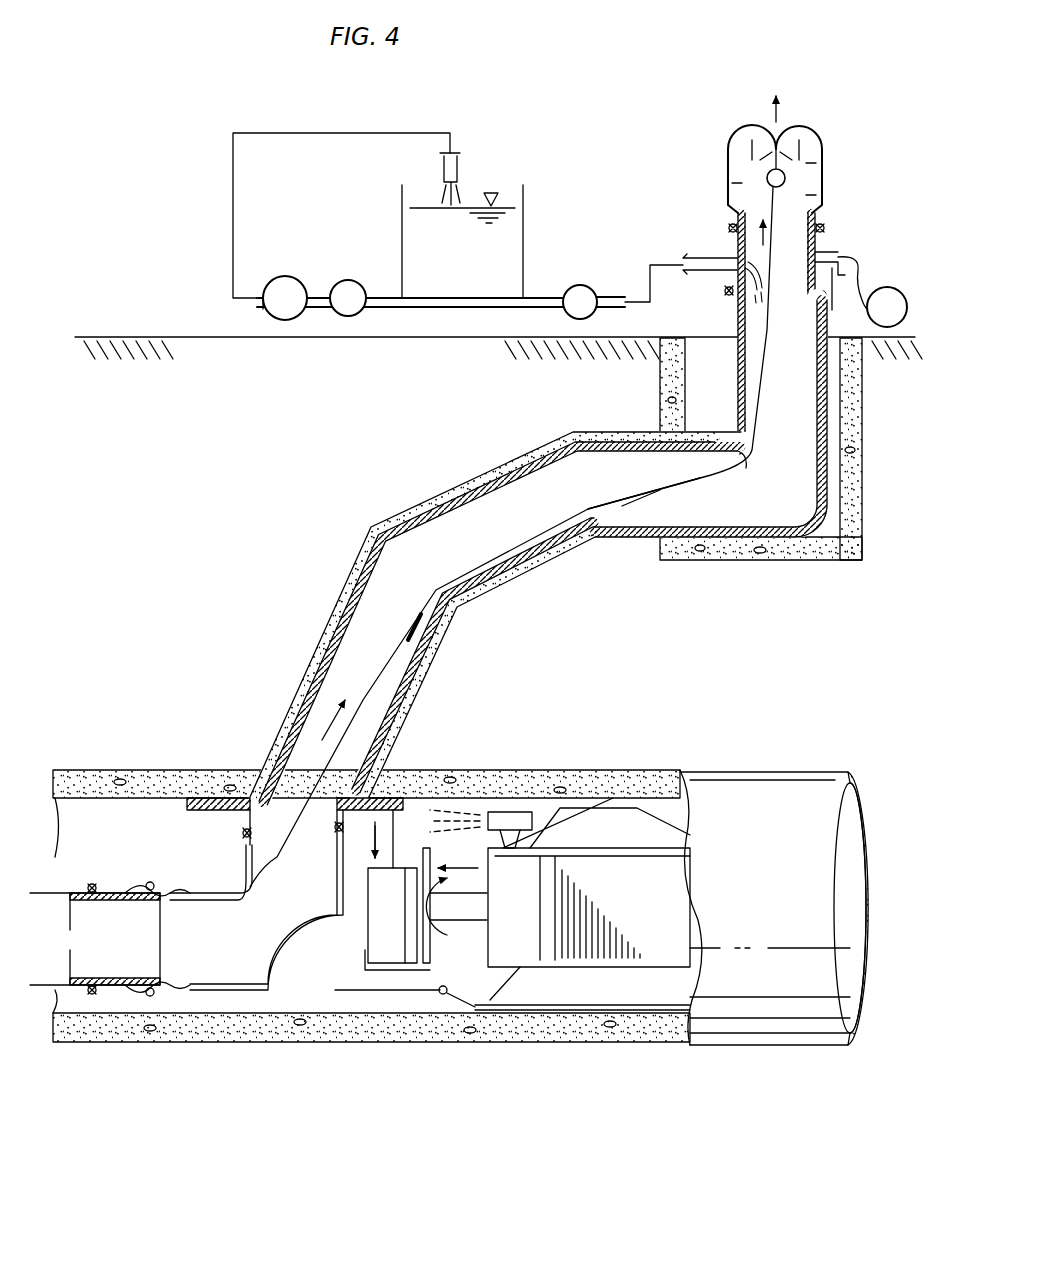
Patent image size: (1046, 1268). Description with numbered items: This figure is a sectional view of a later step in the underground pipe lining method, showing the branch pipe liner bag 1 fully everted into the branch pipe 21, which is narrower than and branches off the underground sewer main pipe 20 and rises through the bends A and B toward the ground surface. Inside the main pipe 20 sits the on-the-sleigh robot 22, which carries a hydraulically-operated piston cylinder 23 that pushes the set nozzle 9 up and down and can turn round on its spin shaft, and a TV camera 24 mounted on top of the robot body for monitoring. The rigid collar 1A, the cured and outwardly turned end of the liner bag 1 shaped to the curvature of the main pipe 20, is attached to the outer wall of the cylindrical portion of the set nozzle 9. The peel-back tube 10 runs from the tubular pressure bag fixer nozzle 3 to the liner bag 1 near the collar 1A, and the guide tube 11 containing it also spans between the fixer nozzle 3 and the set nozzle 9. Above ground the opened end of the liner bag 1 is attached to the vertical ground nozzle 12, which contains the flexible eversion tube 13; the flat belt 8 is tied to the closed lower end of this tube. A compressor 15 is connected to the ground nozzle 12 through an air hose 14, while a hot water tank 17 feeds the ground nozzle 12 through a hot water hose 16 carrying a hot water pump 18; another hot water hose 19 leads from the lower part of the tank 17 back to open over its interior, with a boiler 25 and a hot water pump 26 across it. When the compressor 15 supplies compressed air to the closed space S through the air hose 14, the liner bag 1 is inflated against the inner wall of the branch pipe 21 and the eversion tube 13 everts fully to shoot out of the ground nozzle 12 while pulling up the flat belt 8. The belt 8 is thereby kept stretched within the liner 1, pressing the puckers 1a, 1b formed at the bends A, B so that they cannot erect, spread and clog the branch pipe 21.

The branch pipe liner bag 1 is at (734, 390).
The pucker 1a is at (553, 530).
The pucker 1b is at (409, 627).
The rigid collar 1A is at (200, 768).
The tubular pressure bag fixer nozzle 3 is at (110, 893).
The flat belt 8 is at (477, 567).
The set nozzle 9 is at (197, 822).
The peel-back tube 10 is at (328, 897).
The guide tube 11 is at (165, 888).
The ground nozzle 12 is at (725, 286).
The flexible eversion tube 13 is at (821, 143).
The air hose 14 is at (840, 254).
The compressor 15 is at (887, 287).
The hot water hose 16 is at (614, 297).
The hot water tank 17 is at (524, 240).
The hot water pump 18 is at (580, 285).
The hot water hose 19 is at (318, 308).
The main pipe 20 is at (551, 1042).
The branch pipe 21 is at (448, 490).
The on-the-sleigh robot 22 is at (643, 967).
The hydraulically-operated piston cylinder 23 is at (375, 948).
The TV camera 24 is at (520, 812).
The boiler 25 is at (284, 276).
The hot water pump 26 is at (350, 280).
The bend A is at (596, 546).
The bend B is at (462, 610).
The closed space S is at (750, 501).